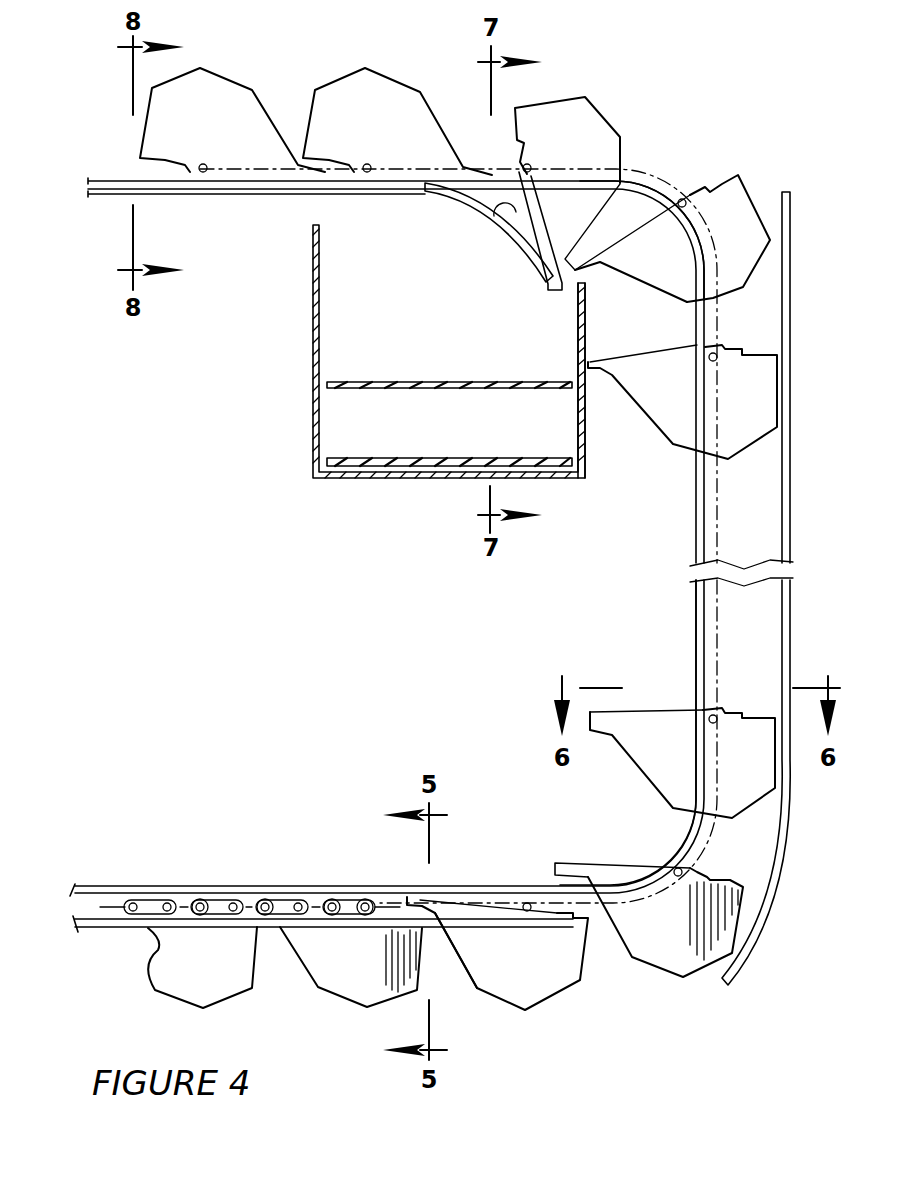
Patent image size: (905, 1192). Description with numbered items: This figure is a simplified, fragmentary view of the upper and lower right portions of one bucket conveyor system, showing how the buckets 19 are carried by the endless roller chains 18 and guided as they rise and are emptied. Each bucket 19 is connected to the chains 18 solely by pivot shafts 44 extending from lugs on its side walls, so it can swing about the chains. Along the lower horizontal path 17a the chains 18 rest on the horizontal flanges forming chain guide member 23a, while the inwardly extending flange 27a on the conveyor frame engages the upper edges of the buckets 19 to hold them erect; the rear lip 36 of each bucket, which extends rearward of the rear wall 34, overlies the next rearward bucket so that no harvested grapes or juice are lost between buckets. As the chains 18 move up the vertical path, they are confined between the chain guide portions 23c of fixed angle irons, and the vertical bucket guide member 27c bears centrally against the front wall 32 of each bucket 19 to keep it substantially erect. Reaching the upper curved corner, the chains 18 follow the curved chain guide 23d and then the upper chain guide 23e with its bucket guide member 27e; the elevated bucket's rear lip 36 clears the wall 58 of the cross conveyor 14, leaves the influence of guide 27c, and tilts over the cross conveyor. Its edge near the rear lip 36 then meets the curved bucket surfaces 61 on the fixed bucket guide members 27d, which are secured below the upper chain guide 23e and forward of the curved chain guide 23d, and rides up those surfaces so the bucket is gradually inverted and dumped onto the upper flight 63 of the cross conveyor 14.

The cross conveyor 14 is at (302, 373).
The lower horizontal path 17a is at (120, 905).
The endless roller chains 18 is at (295, 903).
The bucket 19 is at (585, 128).
The chain guide member 23a is at (112, 922).
The chain guide portions 23c is at (695, 625).
The curved chain guide 23d is at (648, 186).
The upper chain guide 23e is at (228, 194).
The inwardly extending flange 27a is at (255, 890).
The vertical bucket guide member 27c is at (790, 665).
The fixed bucket guide members 27d is at (527, 256).
The bucket guide member 27e is at (108, 186).
The front wall 32 is at (780, 762).
The rear wall 34 is at (455, 962).
The rear lip 36 is at (550, 288).
The pivot shaft 44 is at (366, 900).
The wall 58 is at (588, 300).
The curved bucket surfaces 61 is at (500, 220).
The upper flight 63 is at (473, 382).